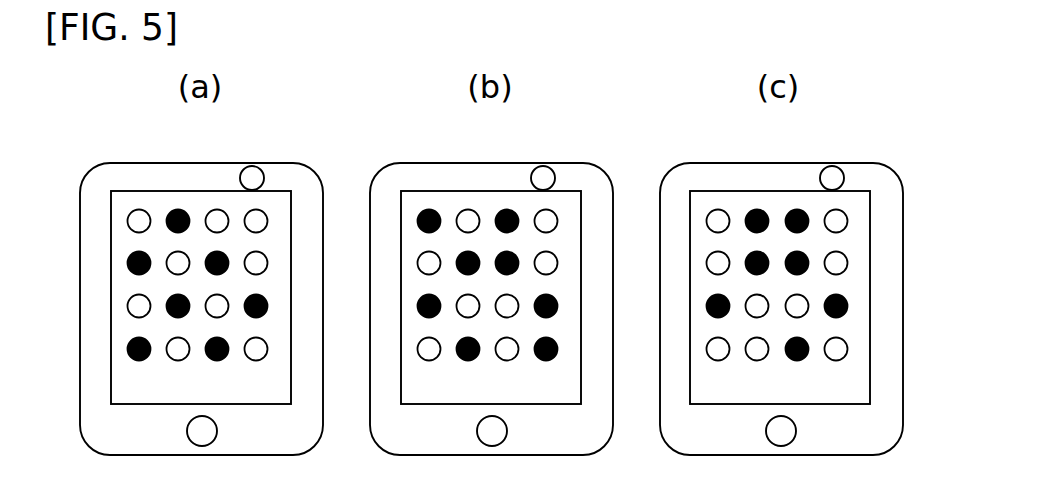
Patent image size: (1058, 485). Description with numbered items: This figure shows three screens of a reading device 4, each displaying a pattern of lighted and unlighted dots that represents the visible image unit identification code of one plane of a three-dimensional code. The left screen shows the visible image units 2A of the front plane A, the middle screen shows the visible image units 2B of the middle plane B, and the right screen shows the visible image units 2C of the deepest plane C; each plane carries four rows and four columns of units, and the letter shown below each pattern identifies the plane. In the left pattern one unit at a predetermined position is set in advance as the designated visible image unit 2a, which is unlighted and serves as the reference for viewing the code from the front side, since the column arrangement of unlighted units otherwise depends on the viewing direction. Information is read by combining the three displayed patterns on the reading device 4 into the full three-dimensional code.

The designated visible image unit 2a is at (172, 210).
The visible image units on plane A 2A is at (179, 261).
The visible image units on plane B 2B is at (445, 207).
The visible image units on plane C 2C is at (745, 205).
The reading device 4 is at (276, 163).